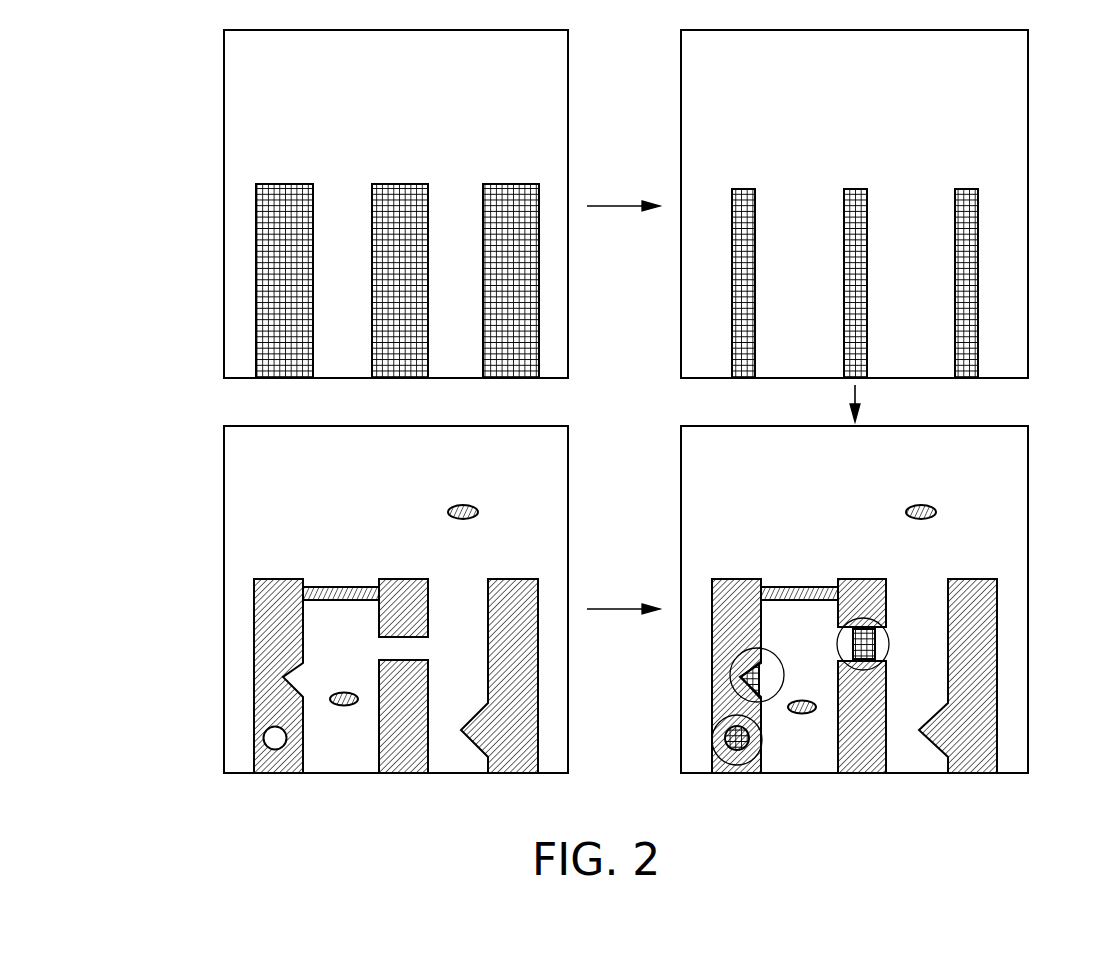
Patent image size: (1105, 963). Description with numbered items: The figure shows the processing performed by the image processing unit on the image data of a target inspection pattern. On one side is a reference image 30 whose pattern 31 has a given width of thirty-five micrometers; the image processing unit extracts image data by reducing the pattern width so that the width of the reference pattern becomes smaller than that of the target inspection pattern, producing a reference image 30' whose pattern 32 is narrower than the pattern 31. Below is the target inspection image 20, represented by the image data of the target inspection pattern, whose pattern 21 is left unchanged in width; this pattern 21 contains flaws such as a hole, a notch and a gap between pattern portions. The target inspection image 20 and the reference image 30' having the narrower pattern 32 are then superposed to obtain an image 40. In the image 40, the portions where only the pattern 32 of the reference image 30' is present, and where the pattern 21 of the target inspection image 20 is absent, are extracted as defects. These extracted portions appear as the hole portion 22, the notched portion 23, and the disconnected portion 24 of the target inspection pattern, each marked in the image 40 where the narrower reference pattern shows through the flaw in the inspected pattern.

The target inspection image 20 is at (224, 519).
The pattern of the target inspection image 21 is at (254, 673).
The hole portion 22 is at (712, 715).
The notched portion 23 is at (712, 672).
The disconnected portion 24 is at (888, 653).
The reference image 30 is at (332, 204).
The reference image having the reduced pattern 30' is at (810, 204).
The pattern of the reference image 31 is at (256, 195).
The reduced pattern of the reference image 32 is at (732, 318).
The superposed image 40 is at (681, 540).